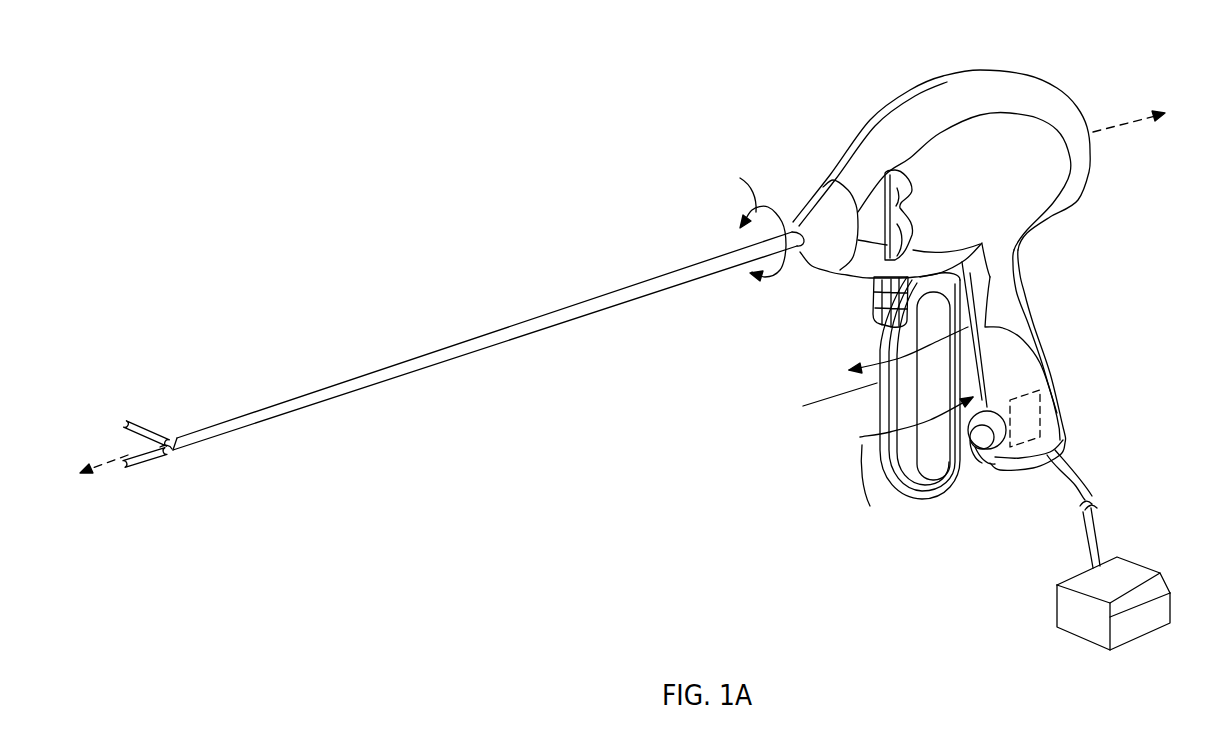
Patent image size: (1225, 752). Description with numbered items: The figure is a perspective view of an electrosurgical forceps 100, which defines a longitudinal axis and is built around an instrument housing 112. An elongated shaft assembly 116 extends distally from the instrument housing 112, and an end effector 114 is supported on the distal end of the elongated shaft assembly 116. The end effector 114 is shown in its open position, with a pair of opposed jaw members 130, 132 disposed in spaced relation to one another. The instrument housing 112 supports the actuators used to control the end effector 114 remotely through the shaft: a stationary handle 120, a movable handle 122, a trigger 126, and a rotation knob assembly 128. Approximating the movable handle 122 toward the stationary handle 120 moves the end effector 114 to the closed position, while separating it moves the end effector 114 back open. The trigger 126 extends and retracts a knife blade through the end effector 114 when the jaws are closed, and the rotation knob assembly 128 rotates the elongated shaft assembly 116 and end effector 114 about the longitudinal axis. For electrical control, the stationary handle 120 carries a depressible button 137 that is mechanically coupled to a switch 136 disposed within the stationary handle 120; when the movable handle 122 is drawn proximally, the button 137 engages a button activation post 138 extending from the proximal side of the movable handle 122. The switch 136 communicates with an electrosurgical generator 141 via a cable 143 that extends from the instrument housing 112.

The electrosurgical forceps 100 is at (583, 265).
The instrument housing 112 is at (888, 106).
The end effector 114 is at (128, 443).
The elongated shaft assembly 116 is at (507, 318).
The stationary handle 120 is at (1057, 430).
The movable handle 122 is at (880, 403).
The trigger 126 is at (872, 303).
The rotation knob assembly 128 is at (885, 172).
The jaw member 130 is at (137, 422).
The jaw member 132 is at (140, 466).
The switch 136 is at (1027, 390).
The depressible button 137 is at (983, 445).
The button activation post 138 is at (953, 482).
The electrosurgical generator 141 is at (1057, 613).
The cable 143 is at (1097, 527).